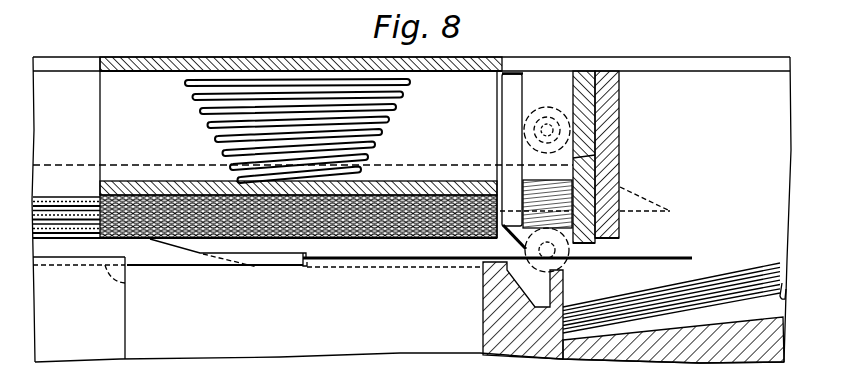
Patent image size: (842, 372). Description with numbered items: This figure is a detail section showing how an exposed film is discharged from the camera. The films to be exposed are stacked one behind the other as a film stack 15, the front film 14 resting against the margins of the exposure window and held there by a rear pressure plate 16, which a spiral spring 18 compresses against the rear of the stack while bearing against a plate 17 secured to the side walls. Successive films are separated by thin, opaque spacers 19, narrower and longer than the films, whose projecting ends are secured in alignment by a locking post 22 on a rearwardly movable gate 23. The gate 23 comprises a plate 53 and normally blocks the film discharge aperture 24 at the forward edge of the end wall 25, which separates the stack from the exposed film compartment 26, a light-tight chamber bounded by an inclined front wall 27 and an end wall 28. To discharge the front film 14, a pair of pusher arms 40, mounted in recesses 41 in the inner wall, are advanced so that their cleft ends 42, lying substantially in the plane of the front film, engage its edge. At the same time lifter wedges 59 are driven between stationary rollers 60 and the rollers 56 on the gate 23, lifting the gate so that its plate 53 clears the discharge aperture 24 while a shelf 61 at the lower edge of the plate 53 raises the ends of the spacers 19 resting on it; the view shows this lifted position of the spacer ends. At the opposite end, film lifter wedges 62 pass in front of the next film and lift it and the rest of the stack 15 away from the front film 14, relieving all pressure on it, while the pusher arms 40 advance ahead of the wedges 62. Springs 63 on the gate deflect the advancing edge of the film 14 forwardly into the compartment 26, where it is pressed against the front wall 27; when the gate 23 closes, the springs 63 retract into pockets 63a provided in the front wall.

The front film 14 is at (410, 262).
The film stack 15 is at (97, 192).
The rear pressure plate 16 is at (421, 186).
The plate 17 is at (205, 50).
The spiral spring 18 is at (200, 96).
The spacers 19 is at (74, 240).
The locking post 22 is at (501, 126).
The gate 23 is at (581, 71).
The film discharge aperture 24 is at (601, 252).
The end wall 25 is at (620, 104).
The exposed film compartment 26 is at (698, 80).
The inclined front wall 27 is at (766, 314).
The end wall 28 is at (566, 294).
The pusher arms 40 is at (222, 264).
The recesses 41 is at (126, 284).
The cleft ends 42 is at (300, 269).
The plate 53 is at (595, 155).
The rollers 56 is at (547, 107).
The lifter wedges 59 is at (652, 188).
The rollers 60 is at (566, 268).
The shelf 61 is at (555, 227).
The film lifter wedges 62 is at (177, 254).
The springs 63 is at (507, 238).
The pockets 63a is at (525, 283).